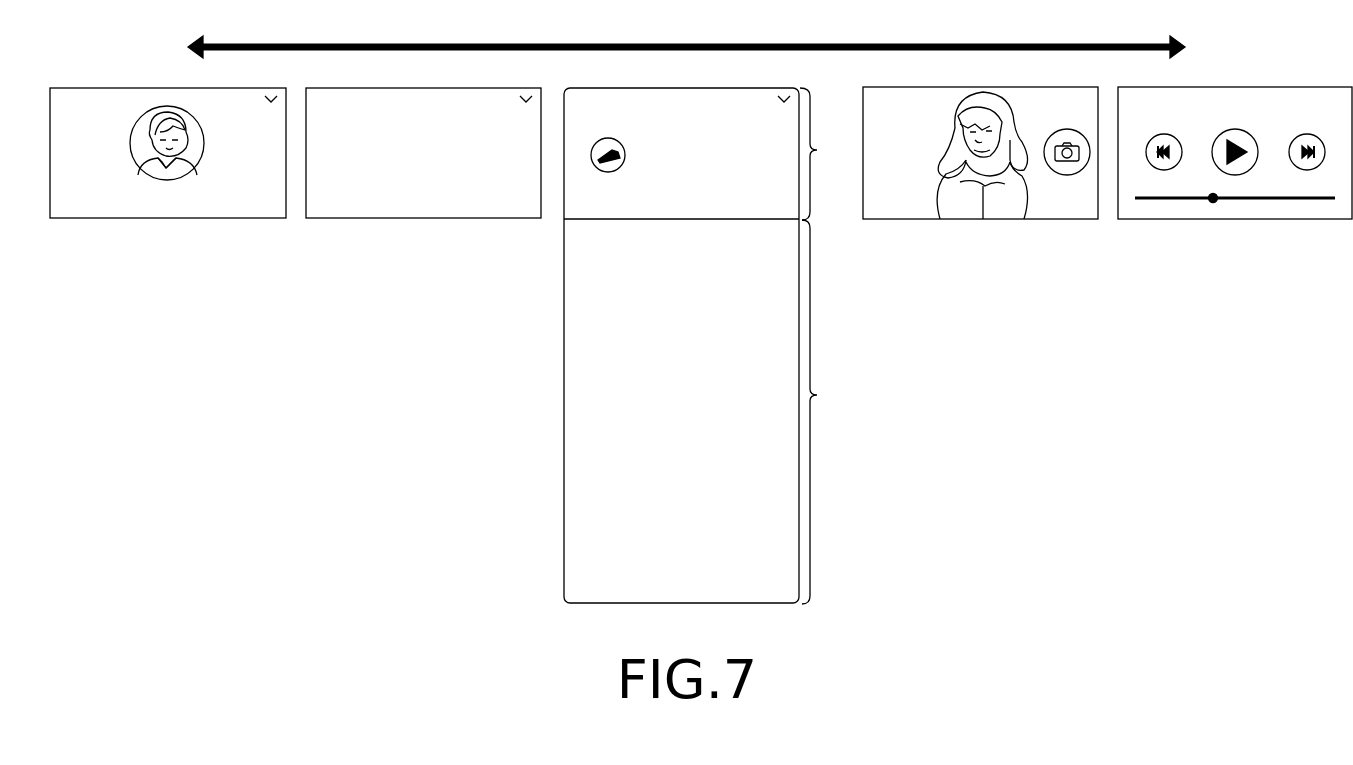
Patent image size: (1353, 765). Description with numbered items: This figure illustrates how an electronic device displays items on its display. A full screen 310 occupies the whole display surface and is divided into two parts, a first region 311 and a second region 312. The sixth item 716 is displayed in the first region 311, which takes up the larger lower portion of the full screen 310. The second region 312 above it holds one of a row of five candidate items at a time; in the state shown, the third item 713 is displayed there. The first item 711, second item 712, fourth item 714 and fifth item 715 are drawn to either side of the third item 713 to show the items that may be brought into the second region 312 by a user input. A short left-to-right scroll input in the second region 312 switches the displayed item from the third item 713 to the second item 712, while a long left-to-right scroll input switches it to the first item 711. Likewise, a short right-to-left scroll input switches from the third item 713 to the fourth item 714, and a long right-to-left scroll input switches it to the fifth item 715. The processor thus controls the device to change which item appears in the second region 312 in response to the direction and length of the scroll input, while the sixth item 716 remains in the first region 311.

The full screen 310 is at (647, 345).
The first region 311 is at (827, 412).
The second region 312 is at (827, 154).
The first item 711 is at (169, 219).
The second item 712 is at (424, 219).
The third item 713 is at (579, 184).
The fourth item 714 is at (983, 220).
The fifth item 715 is at (1237, 220).
The sixth item 716 is at (681, 397).